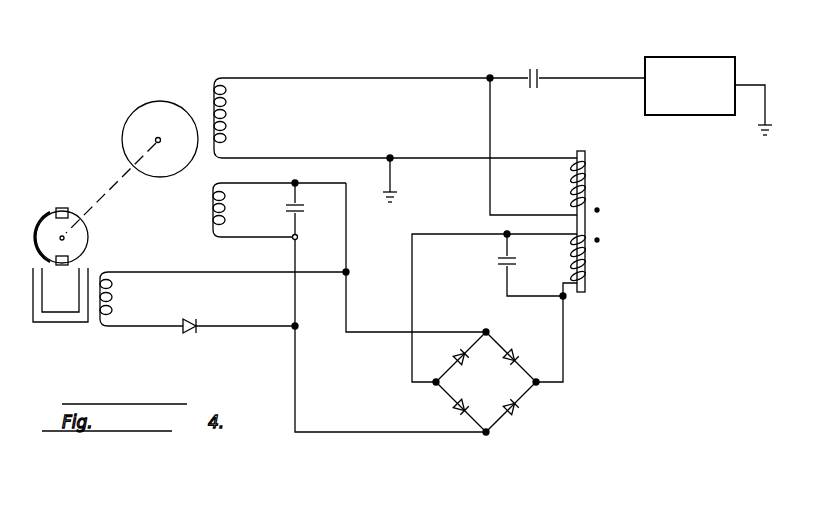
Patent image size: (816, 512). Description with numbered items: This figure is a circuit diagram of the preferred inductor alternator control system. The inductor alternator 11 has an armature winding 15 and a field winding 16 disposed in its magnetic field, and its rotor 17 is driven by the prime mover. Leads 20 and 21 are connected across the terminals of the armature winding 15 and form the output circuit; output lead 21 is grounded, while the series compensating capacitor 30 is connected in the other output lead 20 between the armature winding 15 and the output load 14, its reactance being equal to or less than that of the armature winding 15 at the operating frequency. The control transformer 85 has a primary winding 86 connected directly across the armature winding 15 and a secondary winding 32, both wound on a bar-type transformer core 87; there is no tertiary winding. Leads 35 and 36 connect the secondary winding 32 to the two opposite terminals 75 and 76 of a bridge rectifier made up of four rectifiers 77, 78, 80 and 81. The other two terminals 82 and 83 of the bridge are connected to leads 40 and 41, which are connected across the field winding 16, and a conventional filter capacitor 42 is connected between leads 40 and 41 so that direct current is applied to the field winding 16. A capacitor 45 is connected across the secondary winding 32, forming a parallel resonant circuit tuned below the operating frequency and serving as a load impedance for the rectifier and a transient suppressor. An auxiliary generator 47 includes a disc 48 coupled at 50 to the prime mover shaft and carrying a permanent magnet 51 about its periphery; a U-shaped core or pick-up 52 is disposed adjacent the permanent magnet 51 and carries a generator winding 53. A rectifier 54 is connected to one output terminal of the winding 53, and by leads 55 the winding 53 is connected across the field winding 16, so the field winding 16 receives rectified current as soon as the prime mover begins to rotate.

The inductor alternator 11 is at (190, 74).
The output load 14 is at (693, 57).
The armature winding 15 is at (228, 113).
The field winding 16 is at (210, 205).
The rotor 17 is at (153, 102).
The output lead 20 is at (383, 78).
The output lead 21 is at (321, 158).
The series compensating capacitor 30 is at (540, 75).
The secondary winding 32 is at (590, 270).
The output lead 35 is at (563, 330).
The output lead 36 is at (412, 258).
The lead 40 is at (333, 433).
The lead 41 is at (367, 333).
The filter capacitor 42 is at (288, 206).
The capacitor 45 is at (498, 261).
The auxiliary generator 47 is at (66, 336).
The disc 48 is at (85, 238).
The coupling 50 is at (105, 188).
The permanent magnet 51 is at (60, 209).
The core or pick-up 52 is at (86, 323).
The generator winding 53 is at (112, 276).
The rectifier 54 is at (186, 333).
The leads 55 is at (274, 273).
The bridge rectifier terminal 75 is at (538, 384).
The bridge rectifier terminal 76 is at (434, 386).
The rectifier 77 is at (511, 355).
The rectifier 78 is at (463, 355).
The rectifier 80 is at (514, 410).
The rectifier 81 is at (448, 425).
The bridge rectifier terminal 82 is at (486, 332).
The bridge rectifier terminal 83 is at (485, 434).
The control transformer 85 is at (603, 201).
The primary winding 86 is at (588, 183).
The transformer core 87 is at (582, 151).